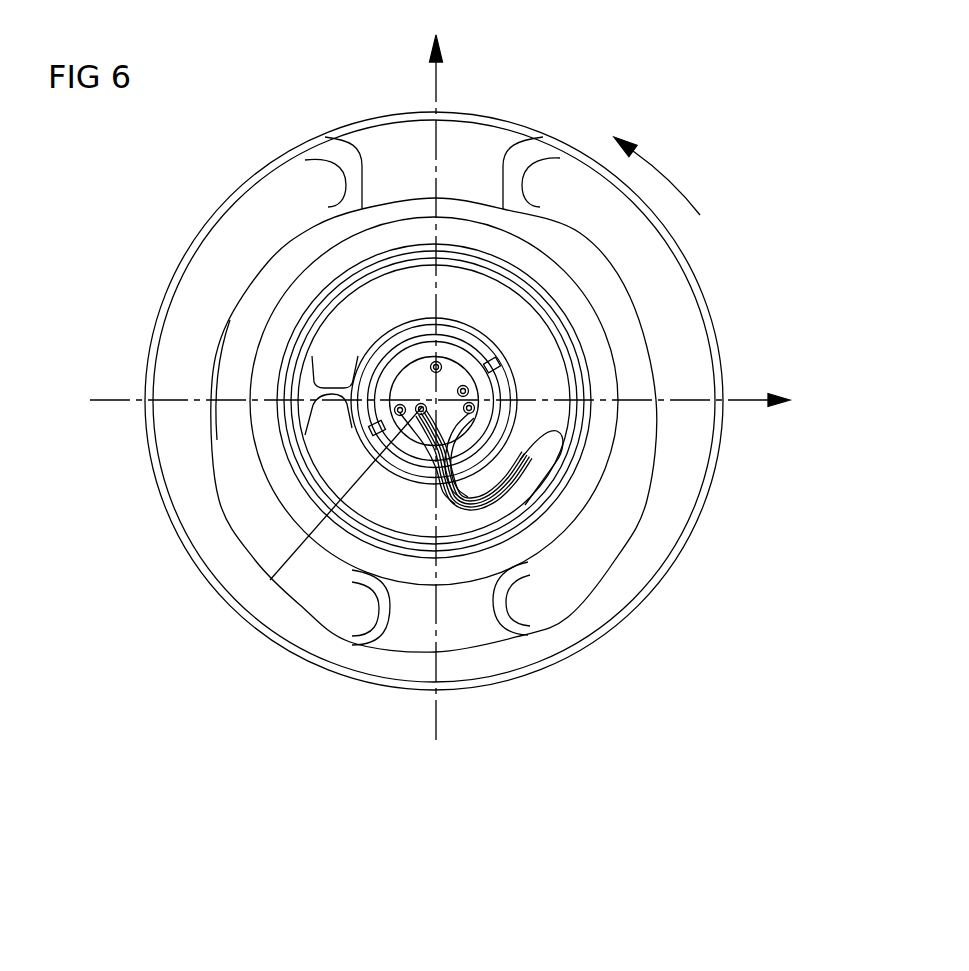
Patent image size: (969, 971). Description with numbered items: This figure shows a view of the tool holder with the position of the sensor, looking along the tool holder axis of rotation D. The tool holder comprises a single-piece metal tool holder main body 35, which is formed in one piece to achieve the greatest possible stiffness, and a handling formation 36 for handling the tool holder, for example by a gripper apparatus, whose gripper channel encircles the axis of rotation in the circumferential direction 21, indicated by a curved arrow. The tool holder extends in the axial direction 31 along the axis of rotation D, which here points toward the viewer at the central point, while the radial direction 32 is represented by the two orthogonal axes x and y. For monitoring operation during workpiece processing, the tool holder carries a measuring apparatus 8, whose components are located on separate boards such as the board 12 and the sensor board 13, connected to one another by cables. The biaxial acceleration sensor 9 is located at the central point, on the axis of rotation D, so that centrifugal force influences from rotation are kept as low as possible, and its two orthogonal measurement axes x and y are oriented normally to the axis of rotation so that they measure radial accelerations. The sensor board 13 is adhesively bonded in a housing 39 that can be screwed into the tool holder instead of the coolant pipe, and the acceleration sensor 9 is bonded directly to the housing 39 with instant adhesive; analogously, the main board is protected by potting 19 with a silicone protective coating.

The radial direction 32 is at (437, 73).
The circumferential direction 21 is at (686, 163).
The tool holder main body 35 is at (489, 401).
The handling formation 36 is at (708, 293).
The housing 39 is at (497, 410).
The axial direction 31 is at (376, 430).
The board 12 is at (512, 600).
The sensor board 13 is at (466, 461).
The potting 19 is at (466, 461).
The acceleration sensor 9 is at (466, 461).
The measuring apparatus 8 is at (406, 418).